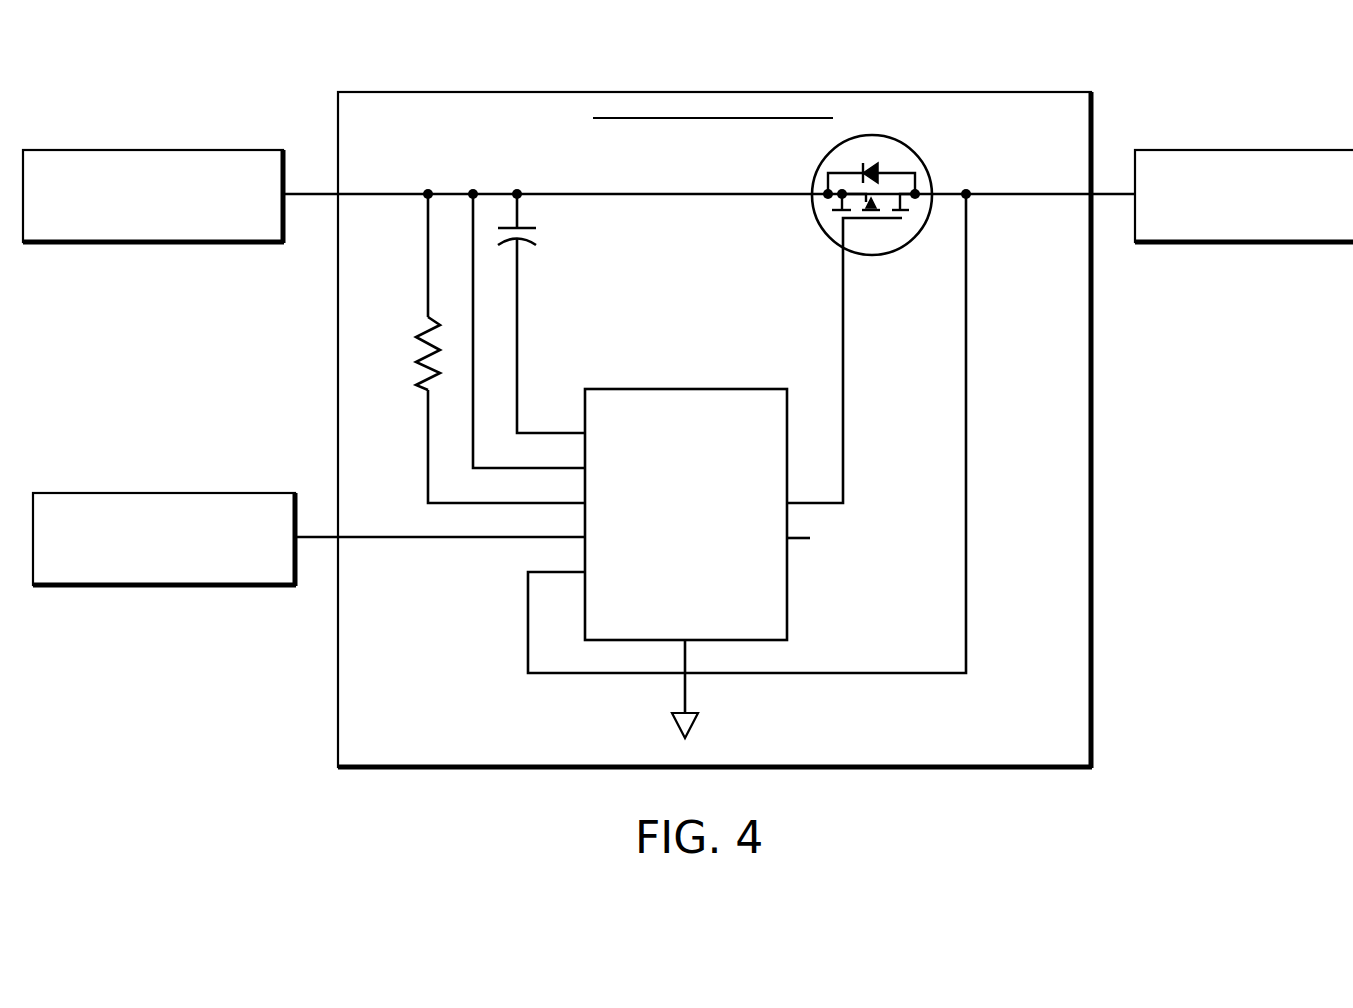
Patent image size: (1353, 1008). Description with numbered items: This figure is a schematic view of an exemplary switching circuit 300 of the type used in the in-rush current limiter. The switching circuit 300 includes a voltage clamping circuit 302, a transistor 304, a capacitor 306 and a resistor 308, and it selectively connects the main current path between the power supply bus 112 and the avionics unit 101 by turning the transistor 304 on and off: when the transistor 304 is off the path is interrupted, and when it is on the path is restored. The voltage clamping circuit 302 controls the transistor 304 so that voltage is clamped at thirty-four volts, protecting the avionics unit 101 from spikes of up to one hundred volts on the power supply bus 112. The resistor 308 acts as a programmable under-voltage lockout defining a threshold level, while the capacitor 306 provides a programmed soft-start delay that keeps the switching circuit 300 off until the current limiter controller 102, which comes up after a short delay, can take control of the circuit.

The avionics unit 101 is at (1223, 150).
The current limiter controller 102 is at (135, 493).
The power supply bus 112 is at (133, 150).
The switching circuit 300 is at (855, 92).
The voltage clamping circuit 302 is at (655, 389).
The transistor 304 is at (920, 160).
The capacitor 306 is at (526, 246).
The resistor 308 is at (418, 353).